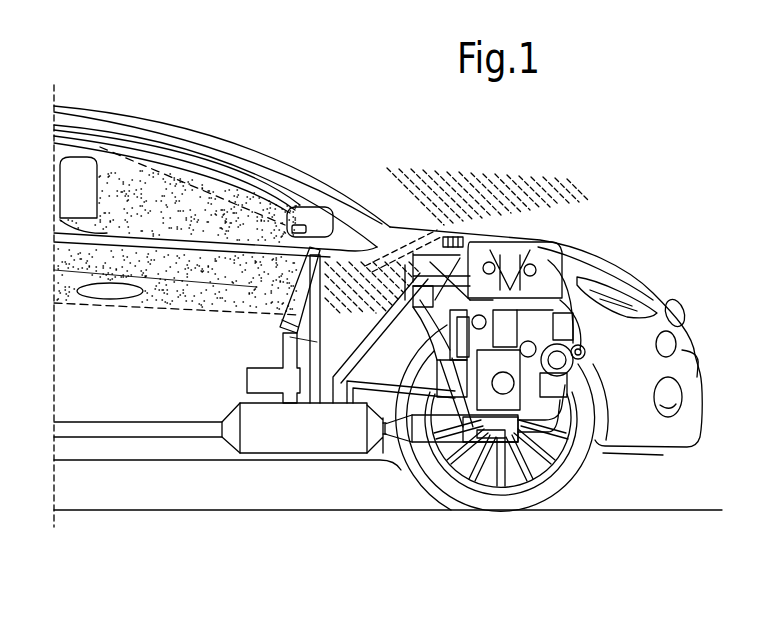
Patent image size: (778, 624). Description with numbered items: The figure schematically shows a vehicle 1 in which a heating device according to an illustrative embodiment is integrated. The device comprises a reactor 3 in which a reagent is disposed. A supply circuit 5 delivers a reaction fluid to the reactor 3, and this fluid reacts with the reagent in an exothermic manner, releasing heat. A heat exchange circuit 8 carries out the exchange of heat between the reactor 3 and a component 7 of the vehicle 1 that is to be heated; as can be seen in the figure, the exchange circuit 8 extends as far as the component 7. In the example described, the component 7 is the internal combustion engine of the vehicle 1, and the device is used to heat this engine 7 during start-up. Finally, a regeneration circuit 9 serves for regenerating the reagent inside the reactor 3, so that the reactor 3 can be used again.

The vehicle 1 is at (279, 122).
The reactor 3 is at (315, 435).
The circuit for the supply of a reaction fluid 5 is at (283, 337).
The component of the vehicle to be heated 7 is at (538, 247).
The circuit for the exchange of heat 8 is at (400, 307).
The circuit for regenerating the reagent 9 is at (390, 443).